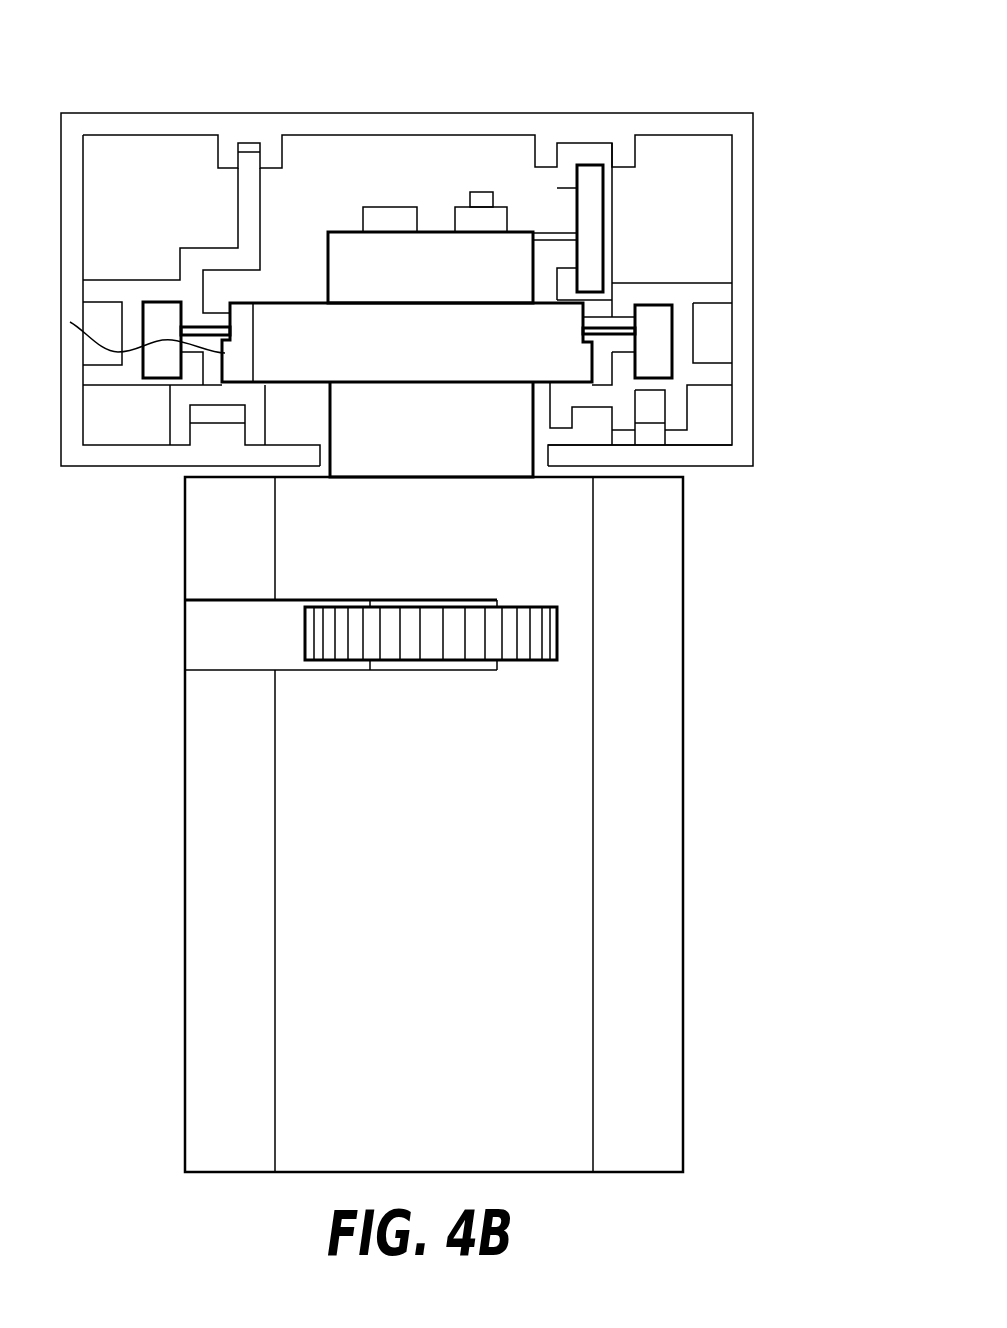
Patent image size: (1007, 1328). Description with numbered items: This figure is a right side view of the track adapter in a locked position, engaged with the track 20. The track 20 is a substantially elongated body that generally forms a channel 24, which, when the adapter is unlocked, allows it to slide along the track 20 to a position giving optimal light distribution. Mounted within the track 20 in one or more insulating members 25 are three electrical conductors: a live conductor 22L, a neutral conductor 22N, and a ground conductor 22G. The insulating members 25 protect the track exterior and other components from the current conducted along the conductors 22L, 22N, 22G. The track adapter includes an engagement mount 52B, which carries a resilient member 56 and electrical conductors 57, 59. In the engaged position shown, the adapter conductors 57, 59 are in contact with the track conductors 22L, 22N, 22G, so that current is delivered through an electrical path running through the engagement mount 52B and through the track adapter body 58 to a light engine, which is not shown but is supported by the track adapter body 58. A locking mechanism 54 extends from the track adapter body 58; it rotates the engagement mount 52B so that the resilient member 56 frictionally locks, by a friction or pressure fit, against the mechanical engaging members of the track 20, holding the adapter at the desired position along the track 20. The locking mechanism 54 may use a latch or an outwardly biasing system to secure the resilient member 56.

The track 20 is at (412, 93).
The ground conductor 22G is at (593, 198).
The live conductor 22L is at (163, 320).
The neutral conductor 22N is at (650, 320).
The channel 24 is at (278, 420).
The insulating members 25 is at (613, 222).
The engagement mount 52B is at (360, 284).
The locking mechanism 54 is at (430, 650).
The resilient member 56 is at (125, 315).
The electrical conductor 57 is at (223, 320).
The track adapter body 58 is at (658, 822).
The electrical conductor 59 is at (550, 232).